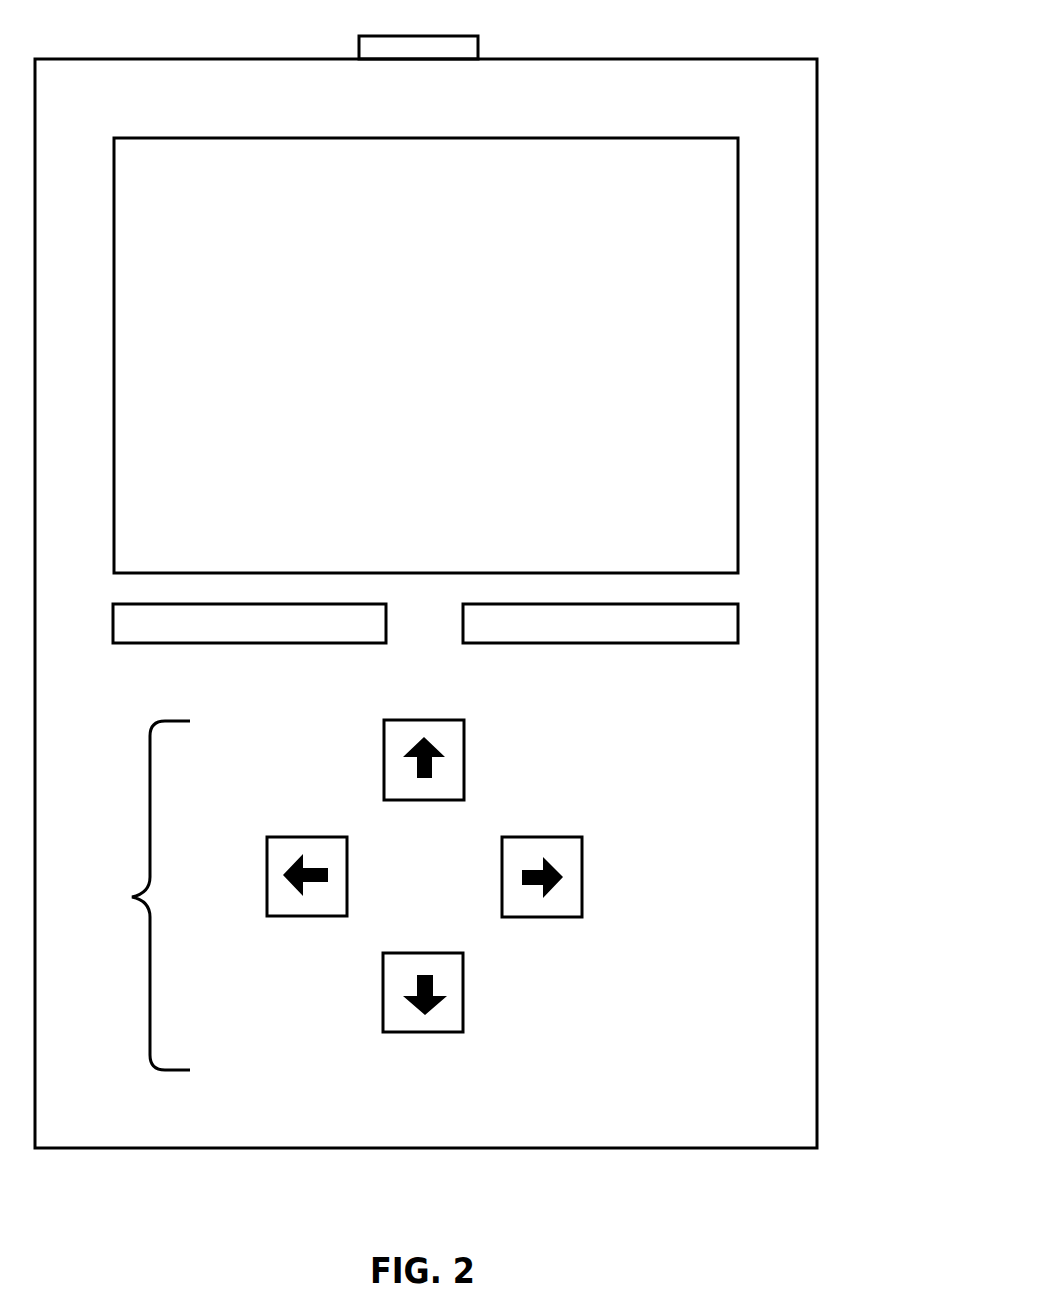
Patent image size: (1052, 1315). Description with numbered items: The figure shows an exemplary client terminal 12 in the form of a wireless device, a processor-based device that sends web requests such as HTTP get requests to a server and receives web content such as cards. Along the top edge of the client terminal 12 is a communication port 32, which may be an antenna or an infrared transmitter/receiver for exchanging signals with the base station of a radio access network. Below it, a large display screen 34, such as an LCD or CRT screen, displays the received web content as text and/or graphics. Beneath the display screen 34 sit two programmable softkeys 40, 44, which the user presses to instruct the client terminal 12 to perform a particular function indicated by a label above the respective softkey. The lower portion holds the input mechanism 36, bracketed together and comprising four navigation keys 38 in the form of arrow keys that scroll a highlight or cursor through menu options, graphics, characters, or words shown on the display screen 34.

The client terminal 12 is at (718, 59).
The communication port 32 is at (435, 35).
The display screen 34 is at (740, 336).
The input mechanism 36 is at (132, 895).
The navigation keys 38 is at (464, 757).
The programmable softkey 40 is at (220, 643).
The programmable softkey 44 is at (593, 643).